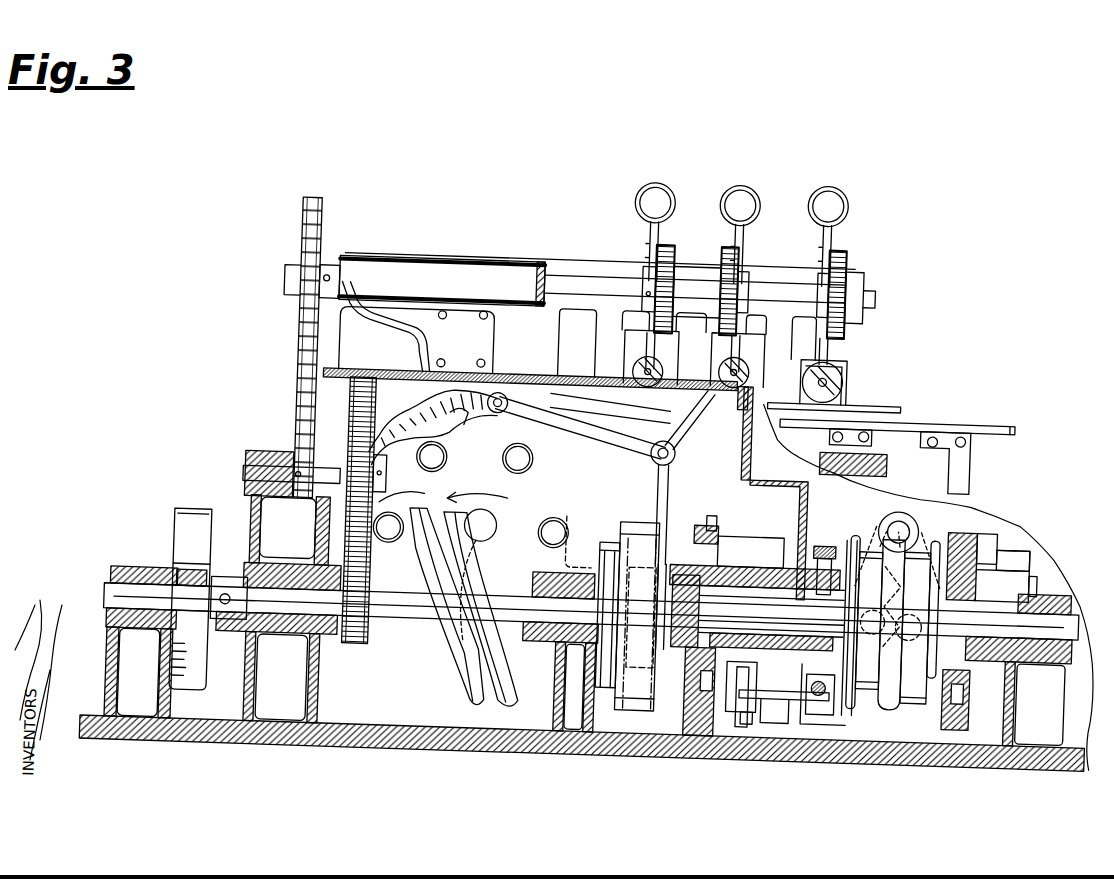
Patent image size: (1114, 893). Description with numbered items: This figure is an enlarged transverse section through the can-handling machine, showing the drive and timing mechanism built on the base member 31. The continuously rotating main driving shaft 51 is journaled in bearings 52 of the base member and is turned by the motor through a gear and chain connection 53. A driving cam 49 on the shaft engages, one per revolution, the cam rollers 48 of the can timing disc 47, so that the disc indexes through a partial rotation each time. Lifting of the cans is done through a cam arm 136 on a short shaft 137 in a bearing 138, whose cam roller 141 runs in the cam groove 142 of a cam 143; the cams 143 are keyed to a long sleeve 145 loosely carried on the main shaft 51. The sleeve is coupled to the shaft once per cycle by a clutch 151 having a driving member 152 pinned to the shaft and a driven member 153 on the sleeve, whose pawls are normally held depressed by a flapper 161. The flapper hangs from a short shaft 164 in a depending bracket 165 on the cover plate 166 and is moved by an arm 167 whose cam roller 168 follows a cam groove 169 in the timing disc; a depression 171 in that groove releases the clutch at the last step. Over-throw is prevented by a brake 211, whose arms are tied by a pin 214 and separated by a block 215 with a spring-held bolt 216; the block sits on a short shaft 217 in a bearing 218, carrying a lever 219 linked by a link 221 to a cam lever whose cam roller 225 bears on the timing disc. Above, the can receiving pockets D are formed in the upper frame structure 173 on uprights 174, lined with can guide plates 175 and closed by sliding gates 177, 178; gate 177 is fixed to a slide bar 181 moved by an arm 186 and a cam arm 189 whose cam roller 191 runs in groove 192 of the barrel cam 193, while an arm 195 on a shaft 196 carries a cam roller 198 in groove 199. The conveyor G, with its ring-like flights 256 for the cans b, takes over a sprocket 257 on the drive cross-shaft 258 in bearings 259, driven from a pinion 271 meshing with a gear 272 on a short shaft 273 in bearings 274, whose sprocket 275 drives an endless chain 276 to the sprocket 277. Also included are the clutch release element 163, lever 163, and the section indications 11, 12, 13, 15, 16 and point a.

The base member 31 is at (392, 738).
The can timing disc 47 is at (485, 517).
The cam rollers 48 is at (408, 446).
The driving cam 49 is at (460, 620).
The main driving shaft 51 is at (122, 582).
The bearings 52 is at (148, 566).
The gear and chain connection 53 is at (184, 512).
The cam arm 136 is at (1000, 520).
The short shaft 137 is at (1050, 578).
The bearing 138 is at (1035, 500).
The cam roller 141 is at (694, 505).
The cam groove 142 is at (672, 505).
The cam 143 is at (978, 694).
The sleeve 145 is at (991, 685).
The clutch 151 is at (598, 482).
The clutch driving member 152 is at (604, 525).
The clutch driven member 153 is at (687, 691).
The flapper 161 is at (662, 462).
The lever bar 163 is at (610, 408).
The short shaft 164 is at (666, 432).
The depending bracket 165 is at (680, 398).
The cover plate 166 is at (562, 360).
The arm 167 is at (580, 428).
The cam roller 168 is at (492, 382).
The cam groove 169 is at (535, 424).
The depression 171 is at (452, 413).
The upper frame structure 173 is at (548, 244).
The uprights 174 is at (485, 312).
The can guide plates 175 is at (838, 395).
The gate 177 is at (895, 420).
The gate 178 is at (929, 391).
The slide bar 181 is at (1010, 443).
The arm 186 is at (904, 462).
The cam arm 189 is at (911, 535).
The cam roller 191 is at (924, 609).
The groove 192 is at (922, 724).
The barrel cam 193 is at (905, 628).
The arm 195 is at (871, 470).
The shaft 196 is at (909, 522).
The cam roller 198 is at (870, 622).
The groove 199 is at (890, 637).
The brake 211 is at (828, 634).
The pin 214 is at (831, 559).
The block 215 is at (828, 647).
The spring-held bolt 216 is at (818, 705).
The short shaft 217 is at (784, 683).
The bearing 218 is at (782, 718).
The lever 219 is at (735, 694).
The link 221 is at (728, 730).
The cam roller 225 is at (571, 521).
The ring-like flights 256 is at (710, 182).
The sprocket 257 is at (634, 262).
The drive cross-shaft 258 is at (584, 262).
The bearings 259 is at (408, 258).
The pinion 271 is at (352, 634).
The gear 272 is at (402, 489).
The short shaft 273 is at (250, 467).
The bearings 274 is at (270, 460).
The sprocket 275 is at (278, 500).
The endless chain 276 is at (288, 322).
The sprocket 277 is at (312, 256).
The conveyor G is at (708, 228).
The can receiving pockets D is at (846, 346).
The detail a is at (790, 350).
The can b is at (835, 340).
The section line 11 is at (727, 165).
The section line 12 is at (466, 370).
The section line 13 is at (665, 440).
The section line 15 is at (840, 520).
The section line 16 is at (972, 375).